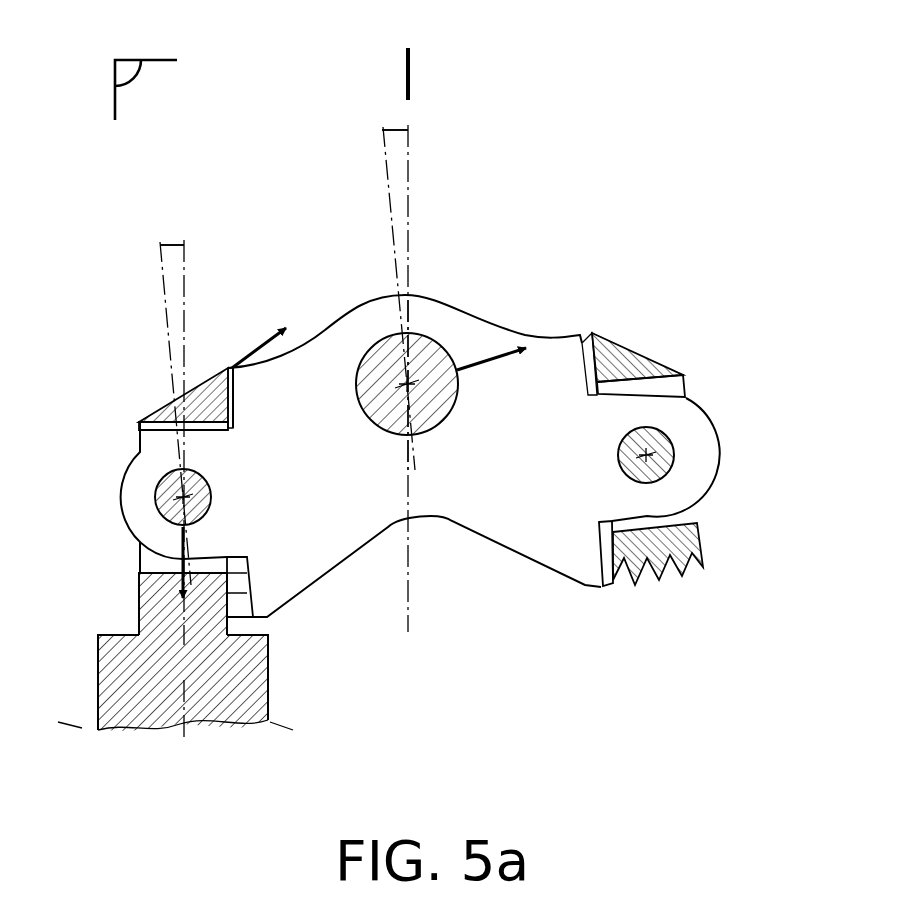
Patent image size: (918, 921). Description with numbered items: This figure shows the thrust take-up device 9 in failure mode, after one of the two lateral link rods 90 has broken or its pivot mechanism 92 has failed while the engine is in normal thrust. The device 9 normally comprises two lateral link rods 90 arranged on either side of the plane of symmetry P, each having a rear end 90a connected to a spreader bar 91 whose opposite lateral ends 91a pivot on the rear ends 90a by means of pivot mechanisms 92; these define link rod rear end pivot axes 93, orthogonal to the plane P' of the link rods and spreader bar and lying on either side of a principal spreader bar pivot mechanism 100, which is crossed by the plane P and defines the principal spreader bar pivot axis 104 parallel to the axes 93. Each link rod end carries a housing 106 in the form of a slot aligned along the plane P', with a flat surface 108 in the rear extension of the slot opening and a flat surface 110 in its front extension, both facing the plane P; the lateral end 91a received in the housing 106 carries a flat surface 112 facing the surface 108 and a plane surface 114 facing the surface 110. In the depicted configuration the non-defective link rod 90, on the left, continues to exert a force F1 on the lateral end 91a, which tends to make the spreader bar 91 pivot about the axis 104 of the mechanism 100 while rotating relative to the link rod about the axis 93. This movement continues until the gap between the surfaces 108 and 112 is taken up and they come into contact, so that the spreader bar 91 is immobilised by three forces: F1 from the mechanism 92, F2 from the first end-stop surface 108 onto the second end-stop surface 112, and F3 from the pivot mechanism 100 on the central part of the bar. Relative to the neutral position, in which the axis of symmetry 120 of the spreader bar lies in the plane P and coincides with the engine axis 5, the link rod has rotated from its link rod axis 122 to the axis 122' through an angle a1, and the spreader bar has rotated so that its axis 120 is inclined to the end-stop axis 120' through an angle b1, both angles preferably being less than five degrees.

The axis of the engine 5 is at (408, 137).
The take-up device 9 is at (557, 216).
The lateral link rod 90 is at (259, 667).
The rear end of link rod 90a is at (152, 593).
The spreader bar 91 is at (500, 328).
The lateral end of spreader bar 91a is at (127, 468).
The pivot mechanism 92 is at (207, 517).
The link rod rear end pivot axis 93 is at (200, 480).
The principal spreader bar pivot mechanism 100 is at (433, 417).
The principal spreader bar pivot axis 104 is at (427, 380).
The housing 106 is at (140, 435).
The flat surface (first end-stop means) 108 is at (233, 410).
The flat surface (third end-stop means) 110 is at (232, 575).
The flat surface (second end-stop means) 112 is at (217, 387).
The plane surface (fourth end-stop means) 114 is at (628, 618).
The axis of symmetry of spreader bar 120 is at (443, 459).
The axis of symmetry of spreader bar in end-stop position 120' is at (346, 298).
The link rod axis 122 is at (117, 490).
The link rod axis in end-stop position 122' is at (216, 398).
The plane of symmetry P is at (435, 61).
The plane of the link rods P' is at (146, 64).
The angle of link rod rotation a1 is at (174, 242).
The angle of spreader bar rotation b1 is at (394, 129).
The force from link rod F1 is at (133, 542).
The force from first end-stop surface F2 is at (284, 306).
The force from spreader bar pivot mechanism F3 is at (482, 330).